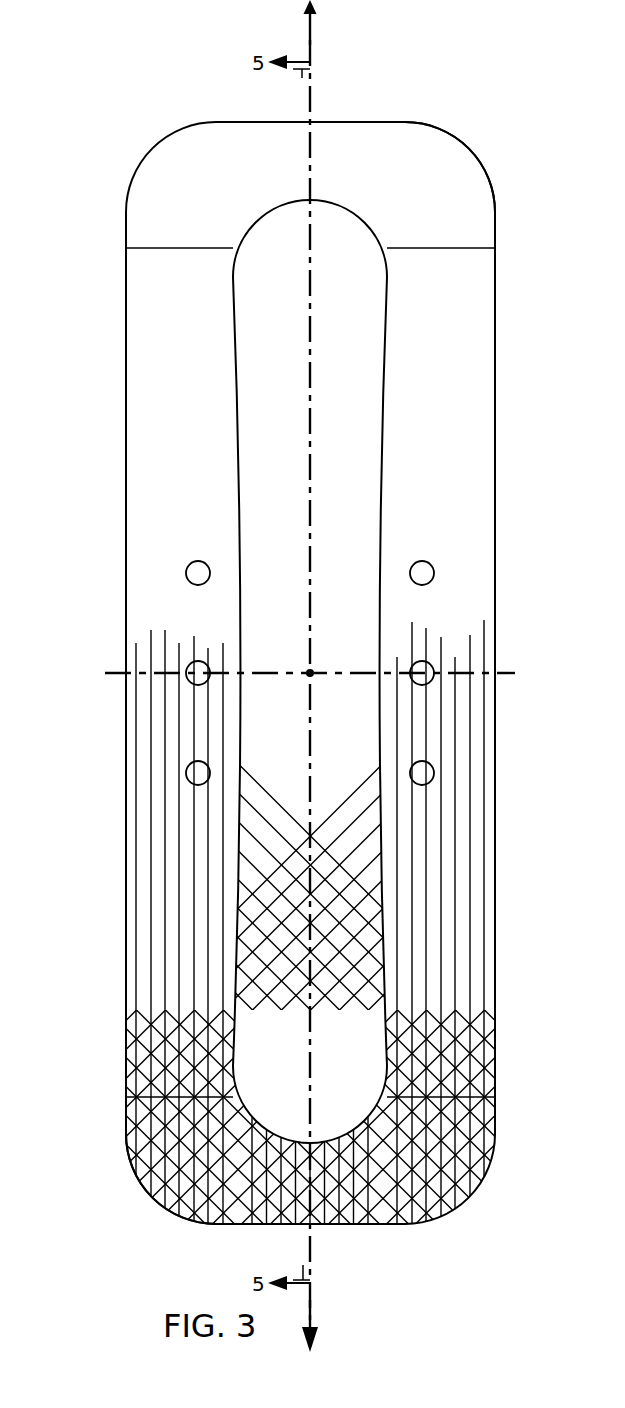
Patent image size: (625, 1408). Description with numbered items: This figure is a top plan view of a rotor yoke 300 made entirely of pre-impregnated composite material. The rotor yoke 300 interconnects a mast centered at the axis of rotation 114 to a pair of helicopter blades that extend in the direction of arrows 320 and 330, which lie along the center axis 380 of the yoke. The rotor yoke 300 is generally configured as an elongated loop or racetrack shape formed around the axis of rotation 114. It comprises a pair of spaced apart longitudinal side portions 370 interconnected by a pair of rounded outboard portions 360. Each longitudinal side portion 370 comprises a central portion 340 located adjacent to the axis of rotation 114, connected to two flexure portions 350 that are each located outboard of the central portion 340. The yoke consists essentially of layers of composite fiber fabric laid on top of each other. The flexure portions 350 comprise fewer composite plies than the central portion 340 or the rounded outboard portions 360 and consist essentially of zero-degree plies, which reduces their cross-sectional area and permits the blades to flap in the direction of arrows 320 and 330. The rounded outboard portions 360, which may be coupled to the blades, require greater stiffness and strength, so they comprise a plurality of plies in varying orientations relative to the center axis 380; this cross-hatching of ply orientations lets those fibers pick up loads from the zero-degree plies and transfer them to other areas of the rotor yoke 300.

The rotor yoke 300 is at (213, 103).
The arrow 320 is at (308, 32).
The arrow 330 is at (313, 1315).
The central portion 340 is at (488, 591).
The flexure portions 350 is at (133, 368).
The rounded outboard portions 360 is at (448, 150).
The longitudinal side portions 370 is at (488, 276).
The center axis 380 is at (312, 116).
The axis of rotation 114 is at (306, 678).